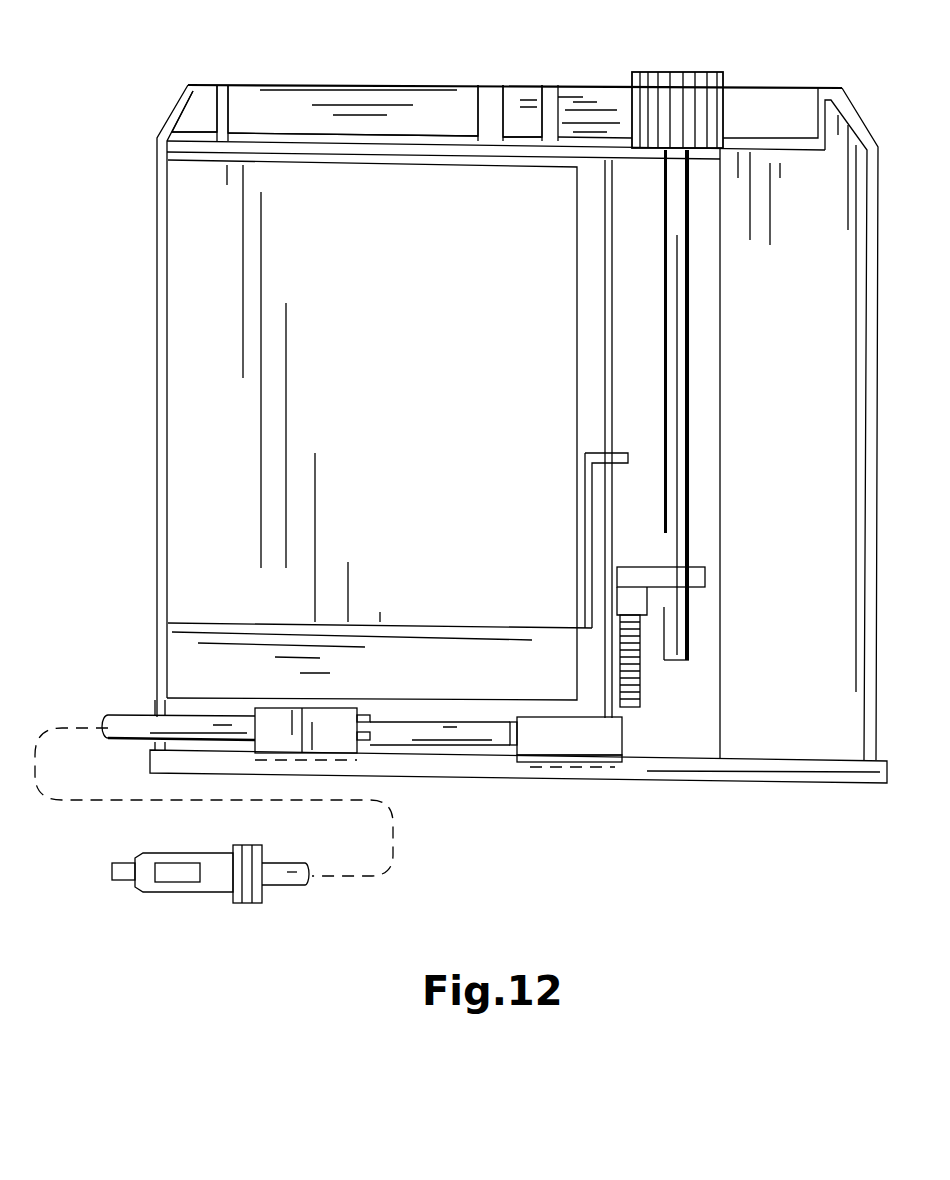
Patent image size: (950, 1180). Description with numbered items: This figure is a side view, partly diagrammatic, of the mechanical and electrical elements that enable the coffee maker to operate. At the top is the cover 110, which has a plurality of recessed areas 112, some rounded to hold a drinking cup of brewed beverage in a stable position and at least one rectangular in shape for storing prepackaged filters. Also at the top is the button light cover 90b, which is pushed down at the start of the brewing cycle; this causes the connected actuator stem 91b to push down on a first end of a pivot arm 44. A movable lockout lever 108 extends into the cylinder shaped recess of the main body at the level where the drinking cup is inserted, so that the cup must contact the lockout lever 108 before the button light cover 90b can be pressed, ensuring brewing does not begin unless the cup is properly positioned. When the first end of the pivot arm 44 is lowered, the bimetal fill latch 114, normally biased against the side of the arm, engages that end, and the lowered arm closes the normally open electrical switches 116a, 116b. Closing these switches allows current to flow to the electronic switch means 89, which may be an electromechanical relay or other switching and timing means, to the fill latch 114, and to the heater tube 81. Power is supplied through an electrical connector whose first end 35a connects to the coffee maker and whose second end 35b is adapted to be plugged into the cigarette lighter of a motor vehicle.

The cover 110 is at (205, 113).
The recessed areas 112 is at (370, 113).
The button light cover 90b is at (723, 87).
The actuator stem 91b is at (680, 338).
The lockout lever 108 is at (627, 462).
The pivot arm 44 is at (670, 573).
The bimetal fill latch 114 is at (640, 684).
The electrical switch 116a is at (613, 787).
The electrical switch 116b is at (560, 748).
The heater tube 81 is at (455, 737).
The electronic switch means 89 is at (323, 738).
The first end of electrical connector 35a is at (108, 727).
The second end of electrical connector 35b is at (215, 885).